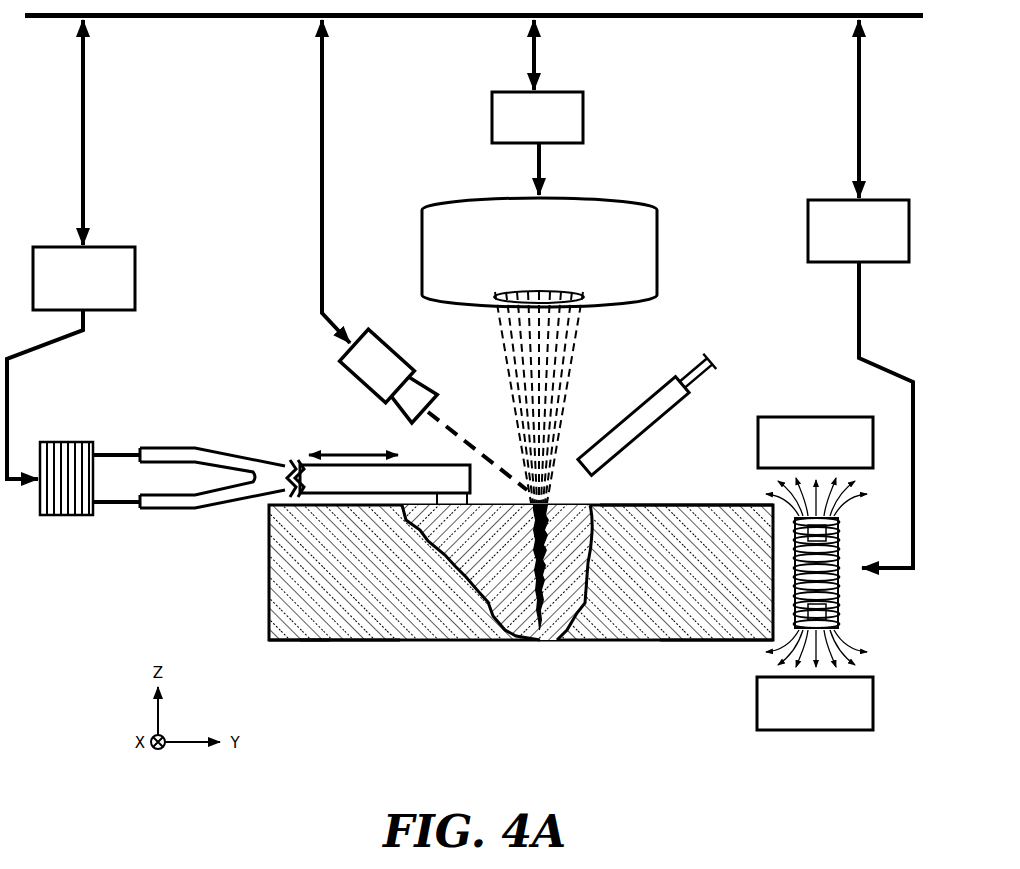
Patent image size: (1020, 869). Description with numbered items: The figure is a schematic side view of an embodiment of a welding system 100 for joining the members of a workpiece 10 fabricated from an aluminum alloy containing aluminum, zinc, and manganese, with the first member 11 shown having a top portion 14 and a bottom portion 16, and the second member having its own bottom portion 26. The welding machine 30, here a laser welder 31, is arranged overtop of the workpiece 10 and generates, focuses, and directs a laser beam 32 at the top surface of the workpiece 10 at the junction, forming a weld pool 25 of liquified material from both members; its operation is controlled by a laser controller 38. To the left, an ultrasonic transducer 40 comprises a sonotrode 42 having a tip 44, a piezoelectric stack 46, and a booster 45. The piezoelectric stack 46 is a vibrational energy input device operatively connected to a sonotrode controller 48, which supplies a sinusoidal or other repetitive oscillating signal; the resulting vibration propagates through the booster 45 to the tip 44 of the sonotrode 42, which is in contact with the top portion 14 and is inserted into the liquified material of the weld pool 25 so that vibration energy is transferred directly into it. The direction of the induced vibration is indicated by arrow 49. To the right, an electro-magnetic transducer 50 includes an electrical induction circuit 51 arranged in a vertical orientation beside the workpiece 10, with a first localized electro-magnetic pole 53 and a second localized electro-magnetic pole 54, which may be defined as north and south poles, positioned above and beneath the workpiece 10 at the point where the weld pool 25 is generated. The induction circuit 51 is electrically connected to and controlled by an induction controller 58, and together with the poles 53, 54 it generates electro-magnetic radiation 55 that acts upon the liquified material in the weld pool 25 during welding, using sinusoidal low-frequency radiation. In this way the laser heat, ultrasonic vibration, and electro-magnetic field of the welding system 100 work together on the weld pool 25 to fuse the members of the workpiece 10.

The welding system 100 is at (213, 165).
The sonotrode controller 48 is at (72, 292).
The ultrasonic transducer 40 is at (157, 345).
The piezoelectric stack 46 is at (67, 442).
The booster 45 is at (100, 478).
The sonotrode 42 is at (265, 470).
The tip 44 is at (447, 493).
The arrow 49 is at (345, 455).
The laser controller 38 is at (525, 130).
The welding machine 30 is at (660, 204).
The laser welder 31 is at (528, 257).
The laser beam 32 is at (564, 406).
The induction controller 58 is at (846, 243).
The second localized electro-magnetic pole 54 is at (803, 454).
The first localized electro-magnetic pole 53 is at (803, 715).
The workpiece 10 is at (263, 570).
The weld pool 25 is at (510, 545).
The top portion 14 is at (700, 505).
The first member 11 is at (268, 628).
The bottom portion 26 is at (330, 642).
The bottom portion 16 is at (703, 642).
The electro-magnetic transducer 50 is at (845, 594).
The electrical induction circuit 51 is at (838, 556).
The electro-magnetic radiation 55 is at (824, 503).